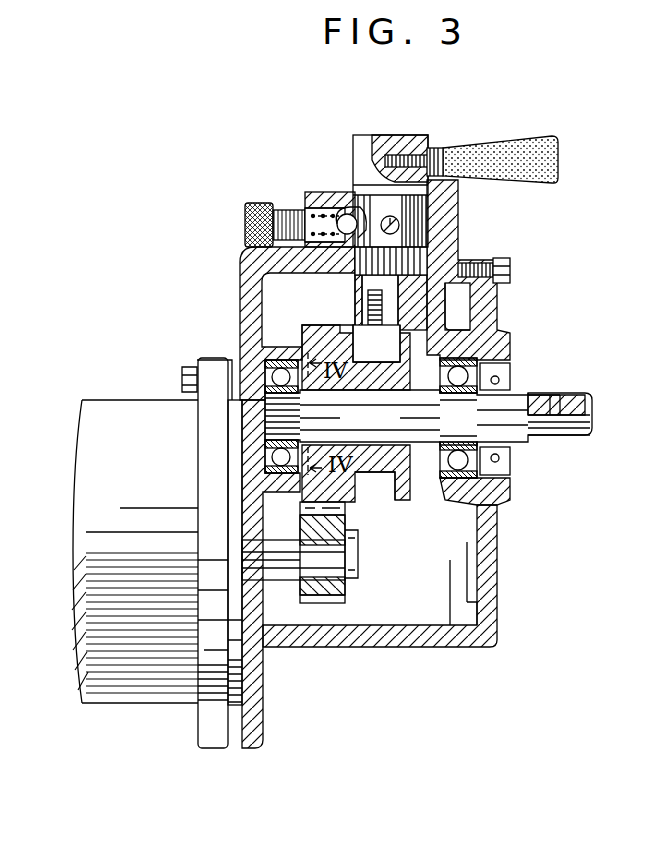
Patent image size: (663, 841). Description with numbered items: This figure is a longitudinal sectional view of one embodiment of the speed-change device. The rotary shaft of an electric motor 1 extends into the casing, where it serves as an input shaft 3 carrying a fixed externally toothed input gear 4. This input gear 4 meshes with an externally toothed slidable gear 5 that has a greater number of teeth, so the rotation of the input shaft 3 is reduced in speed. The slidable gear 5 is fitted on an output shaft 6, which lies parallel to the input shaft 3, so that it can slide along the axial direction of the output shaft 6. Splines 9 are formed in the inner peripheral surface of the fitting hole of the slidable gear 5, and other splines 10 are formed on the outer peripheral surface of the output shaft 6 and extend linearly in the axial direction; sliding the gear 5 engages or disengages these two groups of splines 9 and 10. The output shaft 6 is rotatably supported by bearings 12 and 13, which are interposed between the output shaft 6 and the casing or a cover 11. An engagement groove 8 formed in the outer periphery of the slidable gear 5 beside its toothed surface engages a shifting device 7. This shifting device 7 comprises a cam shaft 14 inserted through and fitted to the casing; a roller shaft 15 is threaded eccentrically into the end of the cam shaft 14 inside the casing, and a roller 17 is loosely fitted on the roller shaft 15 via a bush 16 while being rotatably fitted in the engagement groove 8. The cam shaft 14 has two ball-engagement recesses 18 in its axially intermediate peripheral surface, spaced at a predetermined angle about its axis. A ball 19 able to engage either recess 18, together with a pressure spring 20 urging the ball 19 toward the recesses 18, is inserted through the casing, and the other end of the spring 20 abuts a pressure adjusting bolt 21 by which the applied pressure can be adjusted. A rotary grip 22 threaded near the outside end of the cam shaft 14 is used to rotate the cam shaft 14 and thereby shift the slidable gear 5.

The electric motor 1 is at (131, 410).
The input shaft 3 is at (268, 580).
The externally toothed input gear 4 is at (345, 598).
The externally toothed slidable gear 5 is at (304, 332).
The output shaft 6 is at (555, 428).
The shifting device 7 is at (401, 128).
The engagement groove 8 is at (378, 478).
The splines 9 is at (365, 473).
The splines 10 is at (312, 410).
The cover 11 is at (492, 607).
The bearing 12 is at (280, 473).
The bearing 13 is at (448, 462).
The cam shaft 14 is at (360, 146).
The roller shaft 15 is at (372, 335).
The bush 16 is at (364, 345).
The roller 17 is at (436, 292).
The ball-engagement recesses 18 is at (386, 216).
The ball 19 is at (344, 222).
The pressure spring 20 is at (308, 214).
The pressure adjusting bolt 21 is at (250, 204).
The rotary grip 22 is at (517, 150).